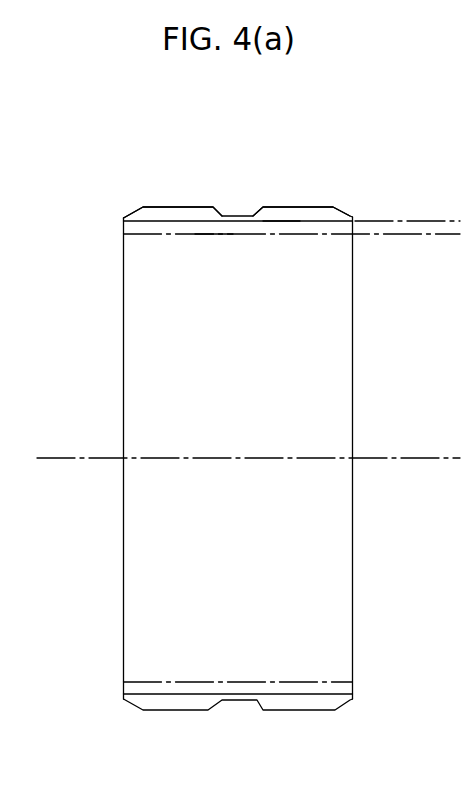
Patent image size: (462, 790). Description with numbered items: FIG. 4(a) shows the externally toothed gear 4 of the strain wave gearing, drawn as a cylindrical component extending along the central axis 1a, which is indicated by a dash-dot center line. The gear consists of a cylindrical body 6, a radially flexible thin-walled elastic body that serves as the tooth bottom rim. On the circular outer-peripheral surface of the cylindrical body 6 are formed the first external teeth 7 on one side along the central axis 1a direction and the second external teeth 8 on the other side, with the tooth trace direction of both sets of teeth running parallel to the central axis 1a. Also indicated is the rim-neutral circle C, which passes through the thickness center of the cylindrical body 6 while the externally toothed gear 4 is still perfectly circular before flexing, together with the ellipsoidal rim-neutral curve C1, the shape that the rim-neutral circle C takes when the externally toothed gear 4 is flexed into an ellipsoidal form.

The externally toothed gear 4 is at (352, 206).
The cylindrical body 6 is at (320, 233).
The first external teeth 7 is at (326, 205).
The second external teeth 8 is at (150, 205).
The rim-neutral circle C is at (212, 238).
The ellipsoidal rim-neutral curve C1 is at (270, 223).
The central axis 1a is at (407, 460).